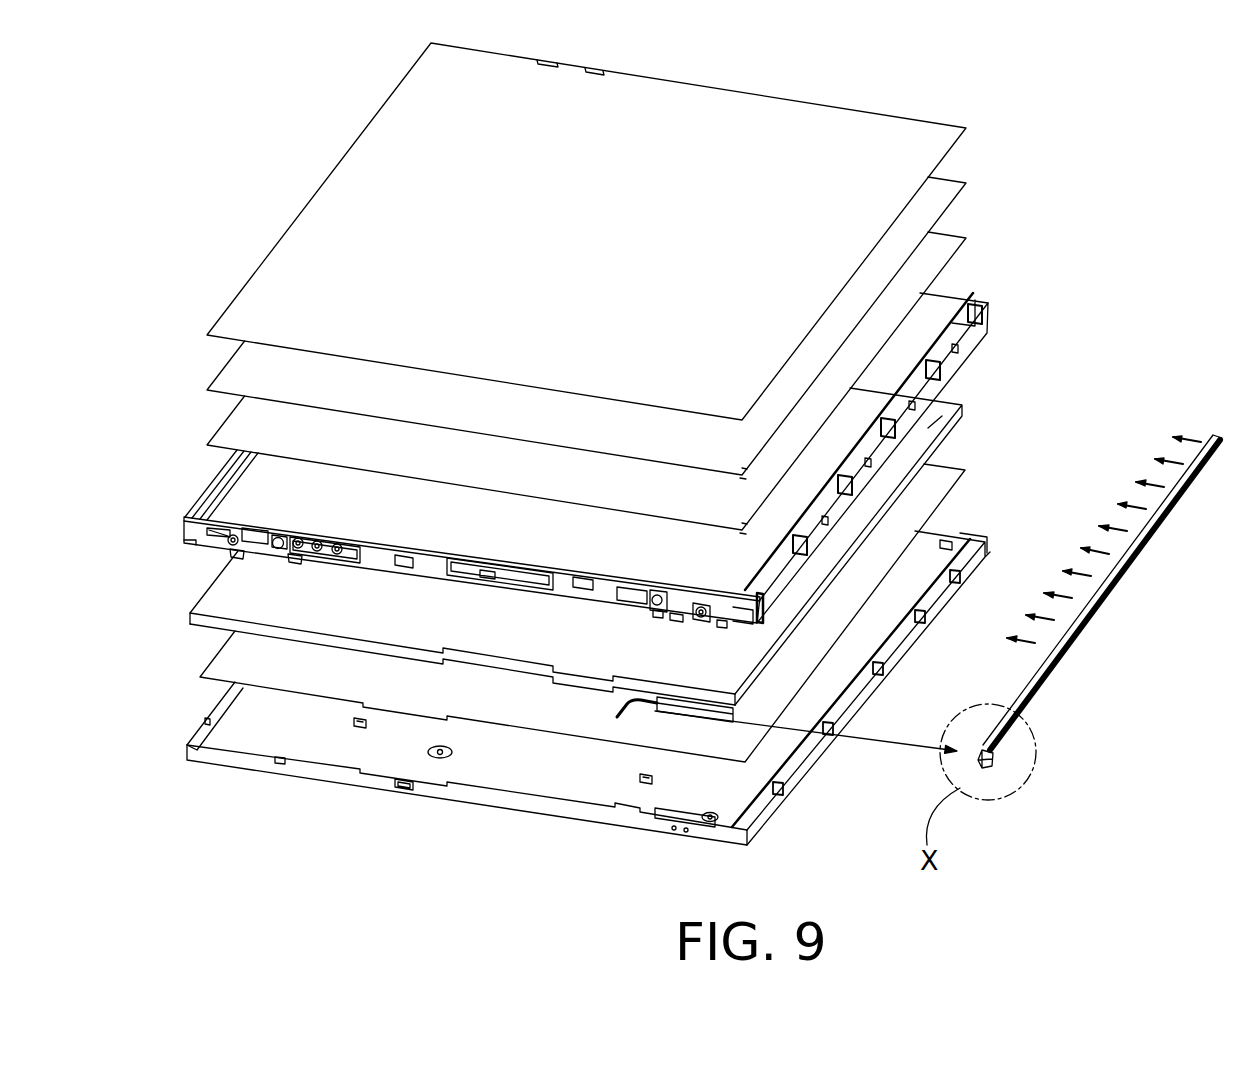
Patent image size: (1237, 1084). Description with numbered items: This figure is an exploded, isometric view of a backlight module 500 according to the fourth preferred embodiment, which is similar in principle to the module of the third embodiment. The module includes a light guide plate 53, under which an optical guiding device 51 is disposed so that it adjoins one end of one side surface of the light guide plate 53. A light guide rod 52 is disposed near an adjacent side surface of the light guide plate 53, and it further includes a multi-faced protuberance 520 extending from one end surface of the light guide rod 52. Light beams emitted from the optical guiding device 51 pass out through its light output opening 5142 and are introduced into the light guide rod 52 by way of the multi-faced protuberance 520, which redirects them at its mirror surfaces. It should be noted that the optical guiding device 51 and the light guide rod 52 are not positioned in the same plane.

The backlight module 500 is at (313, 139).
The optical guiding device 51 is at (700, 716).
The light guide rod 52 is at (1215, 438).
The light guide plate 53 is at (953, 407).
The multi-faced protuberance 520 is at (985, 756).
The light output opening 5142 is at (735, 722).